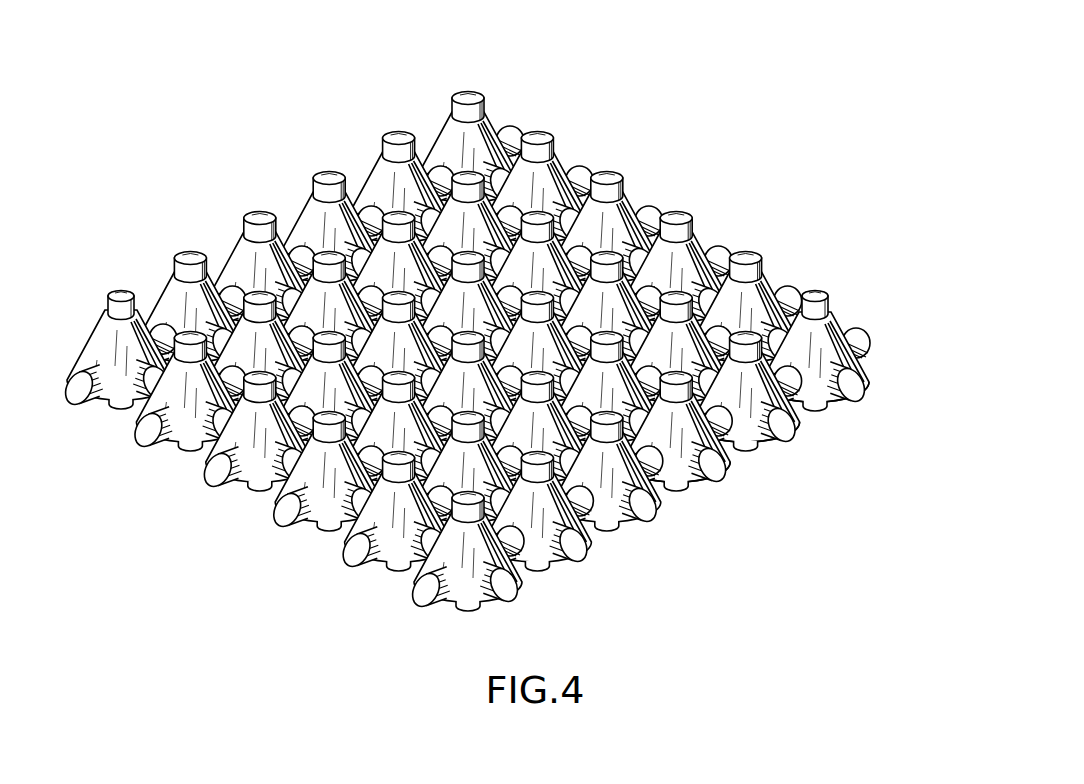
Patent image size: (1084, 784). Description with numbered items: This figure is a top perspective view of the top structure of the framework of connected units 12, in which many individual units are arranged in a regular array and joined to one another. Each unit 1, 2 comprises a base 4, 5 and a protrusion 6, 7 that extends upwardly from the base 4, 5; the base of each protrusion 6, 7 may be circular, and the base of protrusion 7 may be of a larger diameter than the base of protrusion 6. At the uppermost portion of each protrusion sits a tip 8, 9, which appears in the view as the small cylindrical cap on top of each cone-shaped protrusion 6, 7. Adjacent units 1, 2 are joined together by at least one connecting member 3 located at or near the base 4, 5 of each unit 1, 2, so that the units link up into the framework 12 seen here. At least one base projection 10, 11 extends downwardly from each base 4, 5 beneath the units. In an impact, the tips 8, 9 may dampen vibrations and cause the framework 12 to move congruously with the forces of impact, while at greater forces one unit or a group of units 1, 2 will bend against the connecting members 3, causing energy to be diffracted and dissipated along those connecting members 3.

The unit 1 is at (841, 336).
The unit 2 is at (792, 240).
The connecting member 3 is at (836, 373).
The base 4 is at (830, 402).
The base 5 is at (767, 454).
The protrusion 6 is at (846, 337).
The protrusion 7 is at (712, 308).
The tip 8 is at (833, 305).
The tip 9 is at (623, 178).
The base projection 10 is at (678, 484).
The base projection 11 is at (747, 458).
The framework of connected units 12 is at (494, 317).